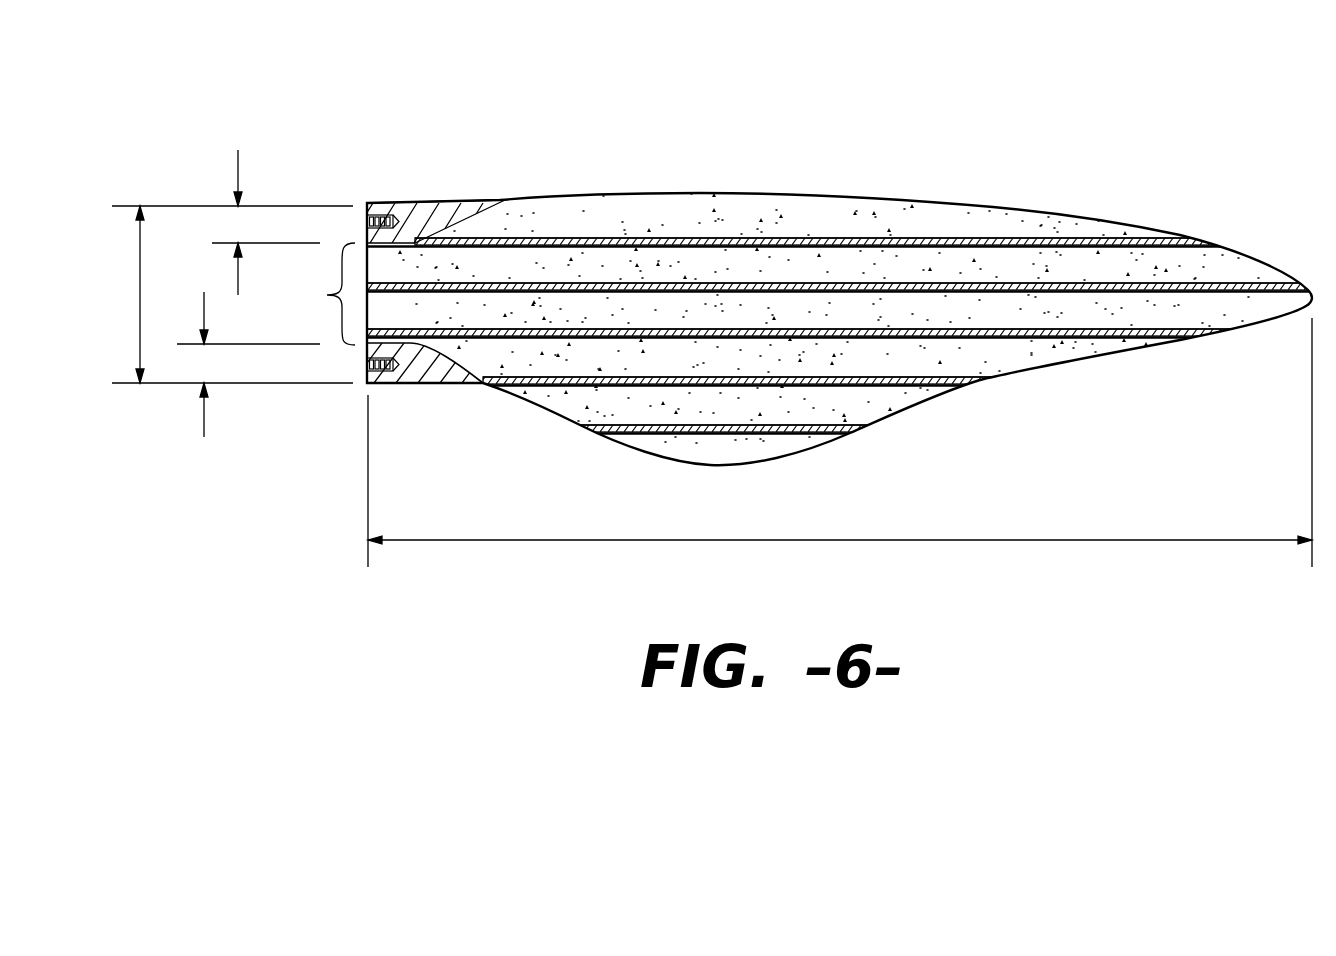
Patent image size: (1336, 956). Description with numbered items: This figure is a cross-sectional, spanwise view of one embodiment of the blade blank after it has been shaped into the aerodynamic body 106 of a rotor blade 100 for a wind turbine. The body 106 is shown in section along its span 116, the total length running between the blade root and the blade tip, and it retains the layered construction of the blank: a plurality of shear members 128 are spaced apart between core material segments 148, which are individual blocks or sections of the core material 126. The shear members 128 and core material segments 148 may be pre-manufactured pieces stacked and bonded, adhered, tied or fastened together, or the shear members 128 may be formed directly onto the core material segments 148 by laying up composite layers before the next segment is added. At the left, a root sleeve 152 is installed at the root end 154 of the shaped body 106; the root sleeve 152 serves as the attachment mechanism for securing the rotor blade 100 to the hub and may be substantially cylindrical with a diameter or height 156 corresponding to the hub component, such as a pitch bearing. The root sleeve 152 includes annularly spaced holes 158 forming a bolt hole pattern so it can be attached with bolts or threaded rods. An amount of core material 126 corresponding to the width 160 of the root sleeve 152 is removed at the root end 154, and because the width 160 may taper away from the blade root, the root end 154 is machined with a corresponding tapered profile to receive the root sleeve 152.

The rotor blade 100 is at (1093, 100).
The body 106 is at (1068, 213).
The span 116 is at (552, 540).
The core material 126 is at (815, 205).
The shear members 128 is at (1137, 240).
The core material segments 148 is at (800, 405).
The root sleeve 152 is at (433, 217).
The root end 154 is at (440, 440).
The diameter or height 156 is at (140, 297).
The annularly spaced holes 158 is at (388, 215).
The width 160 is at (236, 166).